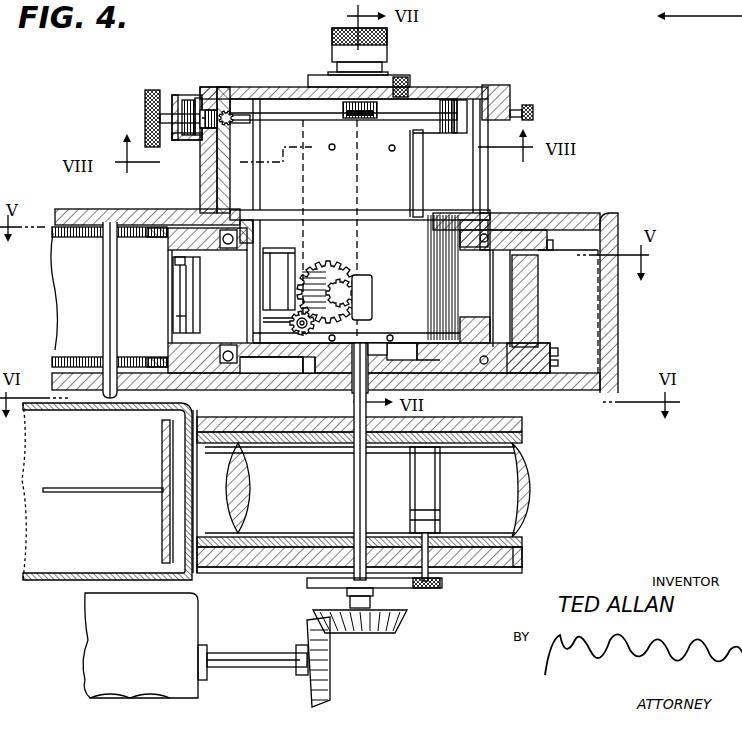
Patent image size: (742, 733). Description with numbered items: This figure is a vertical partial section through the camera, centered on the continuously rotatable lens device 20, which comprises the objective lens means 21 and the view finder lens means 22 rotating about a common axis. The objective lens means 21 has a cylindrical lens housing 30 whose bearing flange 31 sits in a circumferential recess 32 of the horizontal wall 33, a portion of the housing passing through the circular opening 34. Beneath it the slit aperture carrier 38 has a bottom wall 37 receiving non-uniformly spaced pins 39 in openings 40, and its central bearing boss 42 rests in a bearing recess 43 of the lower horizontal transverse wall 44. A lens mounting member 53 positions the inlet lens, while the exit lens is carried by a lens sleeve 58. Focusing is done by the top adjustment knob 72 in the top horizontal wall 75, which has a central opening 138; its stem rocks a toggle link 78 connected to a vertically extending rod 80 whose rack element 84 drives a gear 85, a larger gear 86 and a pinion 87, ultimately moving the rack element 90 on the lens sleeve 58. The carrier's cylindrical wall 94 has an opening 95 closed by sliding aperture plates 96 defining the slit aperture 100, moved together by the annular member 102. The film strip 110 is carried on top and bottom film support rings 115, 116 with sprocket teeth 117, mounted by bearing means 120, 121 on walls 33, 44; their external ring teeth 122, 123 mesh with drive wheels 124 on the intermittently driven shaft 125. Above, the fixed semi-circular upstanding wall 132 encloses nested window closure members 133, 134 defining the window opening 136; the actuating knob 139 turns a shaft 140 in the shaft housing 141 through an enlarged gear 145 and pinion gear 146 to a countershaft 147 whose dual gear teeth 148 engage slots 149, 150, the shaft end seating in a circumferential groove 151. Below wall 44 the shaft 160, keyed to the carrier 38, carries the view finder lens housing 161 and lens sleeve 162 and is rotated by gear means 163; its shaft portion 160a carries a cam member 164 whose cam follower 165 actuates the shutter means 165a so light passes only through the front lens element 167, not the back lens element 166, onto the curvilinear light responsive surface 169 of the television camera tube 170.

The continuously rotatable lens device 20 is at (484, 64).
The objective lens means 21 is at (430, 175).
The view finder lens means 22 is at (540, 495).
The lens housing 30 is at (327, 184).
The bearing flange 31 is at (436, 210).
The circumferential recess 32 is at (215, 201).
The horizontal wall 33 is at (530, 212).
The circular opening 34 is at (463, 250).
The bottom wall 37 is at (430, 335).
The slit aperture carrier 38 is at (540, 312).
The pins 39 is at (300, 350).
The openings 40 is at (440, 374).
The central bearing boss 42 is at (333, 362).
The bearing recess 43 is at (378, 345).
The horizontal transverse wall 44 is at (557, 390).
The lens mounting member 53 is at (424, 158).
The lens sleeve 58 is at (266, 272).
The top adjustment knob 72 is at (390, 43).
The top horizontal wall 75 is at (297, 87).
The toggle link 78 is at (372, 118).
The vertically extending rod 80 is at (362, 196).
The rack element 84 is at (366, 295).
The gear 85 is at (330, 265).
The larger gear 86 is at (372, 278).
The pinion 87 is at (288, 318).
The rack element 90 is at (290, 322).
The cylindrical wall 94 is at (530, 290).
The opening 95 is at (200, 278).
The aperture plates 96 is at (180, 300).
The slit aperture 100 is at (176, 316).
The annular member 102 is at (463, 318).
The film strip 110 is at (168, 256).
The top film support ring 115 is at (551, 232).
The bottom film support ring 116 is at (552, 350).
The sprocket teeth 117 is at (558, 242).
The bearing means 120 is at (497, 222).
The bearing means 121 is at (487, 376).
The ring teeth 122 is at (597, 222).
The ring teeth 123 is at (560, 363).
The drive wheels 124 is at (55, 238).
The shaft 125 is at (107, 297).
The semi-circular upstanding wall 132 is at (205, 184).
The window closure member 133 is at (246, 194).
The window closure member 134 is at (248, 172).
The window opening 136 is at (534, 117).
The central opening 138 is at (405, 82).
The actuating knob 139 is at (145, 106).
The shaft 140 is at (165, 112).
The shaft housing 141 is at (176, 95).
The enlarged gear 145 is at (188, 100).
The pinion gear 146 is at (190, 140).
The countershaft 147 is at (203, 100).
The dual gear teeth 148 is at (208, 110).
The slot 149 is at (235, 92).
The slot 150 is at (210, 135).
The circumferential groove 151 is at (249, 122).
The shaft 160 is at (356, 432).
The shaft portion 160a is at (348, 578).
The view finder lens housing 161 is at (522, 560).
The lens sleeve 162 is at (525, 540).
The gear means 163 is at (342, 637).
The cam member 164 is at (410, 590).
The cam follower 165 is at (442, 584).
The shutter means 165a is at (440, 487).
The back lens element 166 is at (247, 500).
The front lens element 167 is at (533, 472).
The light responsive surface 169 is at (167, 462).
The television camera tube 170 is at (55, 580).